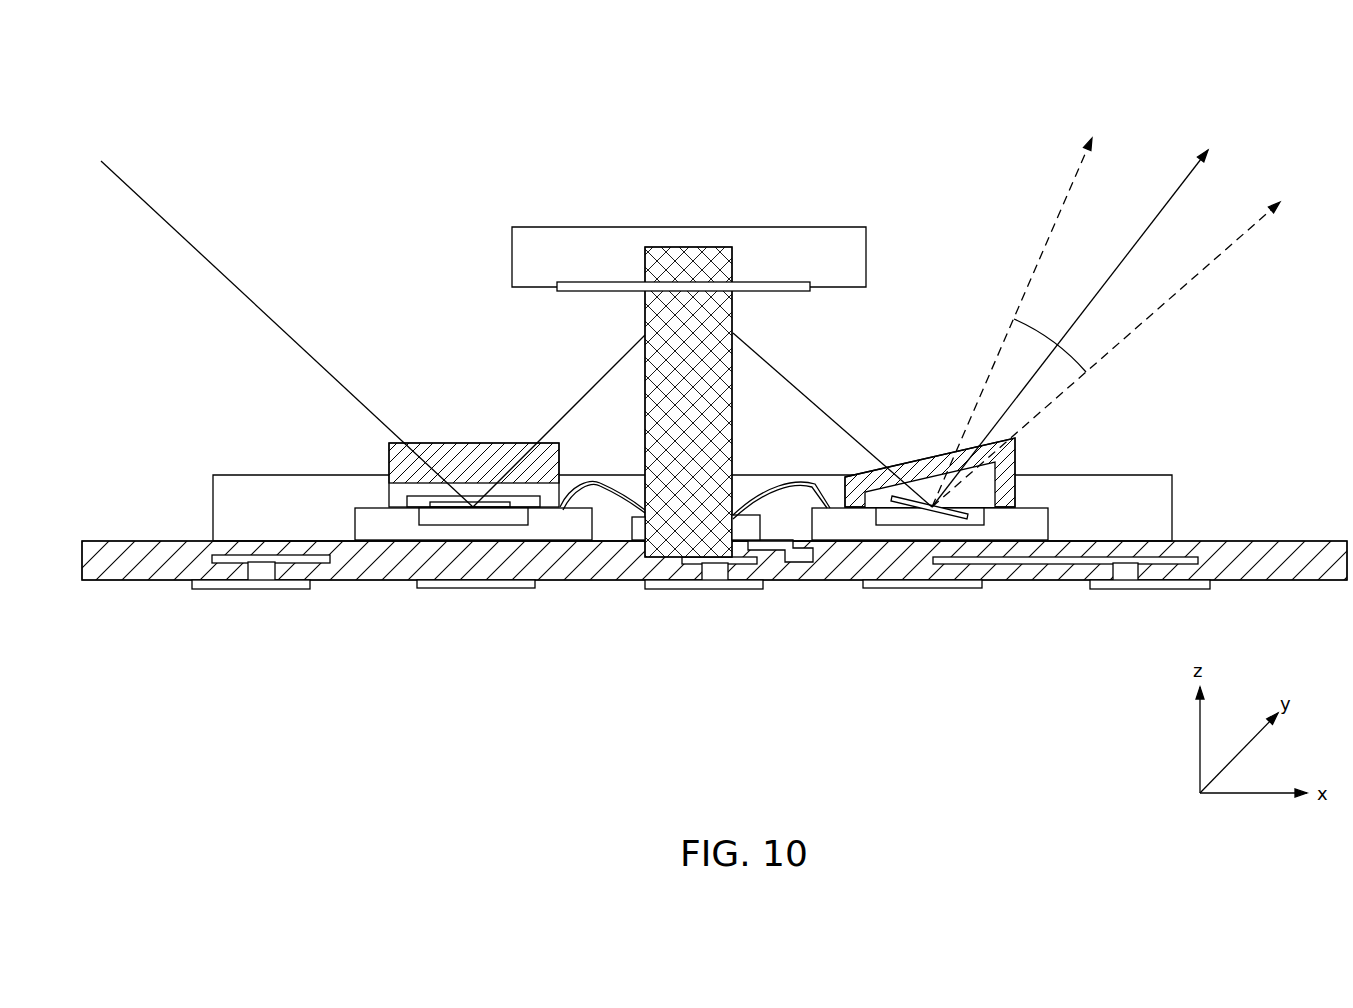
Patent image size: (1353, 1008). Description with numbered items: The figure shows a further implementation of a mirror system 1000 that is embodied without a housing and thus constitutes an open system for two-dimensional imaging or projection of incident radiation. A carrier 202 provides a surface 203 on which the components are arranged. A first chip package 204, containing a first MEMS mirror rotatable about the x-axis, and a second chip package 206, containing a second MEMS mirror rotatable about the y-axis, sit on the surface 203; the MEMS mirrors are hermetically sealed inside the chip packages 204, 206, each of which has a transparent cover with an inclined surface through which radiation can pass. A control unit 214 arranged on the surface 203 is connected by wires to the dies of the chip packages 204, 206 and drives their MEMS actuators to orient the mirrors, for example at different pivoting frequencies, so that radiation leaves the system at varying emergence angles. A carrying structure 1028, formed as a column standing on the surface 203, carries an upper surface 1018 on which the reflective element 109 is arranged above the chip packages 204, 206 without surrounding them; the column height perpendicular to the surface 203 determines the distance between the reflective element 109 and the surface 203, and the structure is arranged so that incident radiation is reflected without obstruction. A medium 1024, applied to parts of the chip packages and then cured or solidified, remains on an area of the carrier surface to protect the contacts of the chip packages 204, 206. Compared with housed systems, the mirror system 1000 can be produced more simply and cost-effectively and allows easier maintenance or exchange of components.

The mirror system 1000 is at (714, 352).
The carrying structure 1028 is at (697, 208).
The upper surface 1018 is at (548, 227).
The reflective element 109 is at (800, 292).
The first chip package 204 is at (465, 415).
The control unit 214 is at (787, 460).
The second chip package 206 is at (912, 443).
The medium 1024 is at (260, 475).
The surface 203 is at (130, 540).
The carrier 202 is at (123, 580).